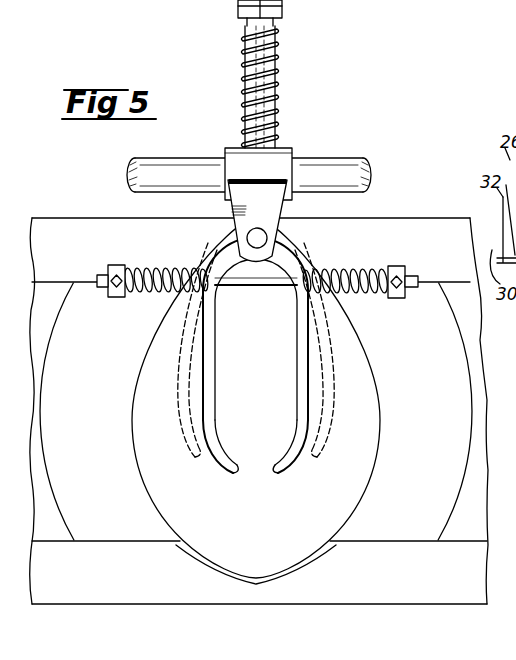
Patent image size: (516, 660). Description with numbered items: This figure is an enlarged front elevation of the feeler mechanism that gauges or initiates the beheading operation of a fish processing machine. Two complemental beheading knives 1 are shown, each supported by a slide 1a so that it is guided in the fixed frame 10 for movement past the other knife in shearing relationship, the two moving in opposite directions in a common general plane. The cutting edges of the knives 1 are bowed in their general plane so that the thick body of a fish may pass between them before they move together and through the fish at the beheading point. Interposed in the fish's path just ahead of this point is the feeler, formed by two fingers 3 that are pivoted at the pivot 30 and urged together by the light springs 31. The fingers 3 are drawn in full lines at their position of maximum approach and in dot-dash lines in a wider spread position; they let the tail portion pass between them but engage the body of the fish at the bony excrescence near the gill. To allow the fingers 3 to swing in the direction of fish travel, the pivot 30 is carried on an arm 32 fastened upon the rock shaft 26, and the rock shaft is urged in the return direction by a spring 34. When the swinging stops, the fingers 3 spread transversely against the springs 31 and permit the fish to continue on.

The beheading knife 1 is at (127, 395).
The slide 1a is at (474, 518).
The finger 3 is at (295, 387).
The fixed frame 10 is at (398, 232).
The rock shaft 26 is at (333, 170).
The pivot 30 is at (258, 238).
The light spring 31 is at (152, 270).
The arm 32 is at (267, 220).
The spring 34 is at (272, 87).